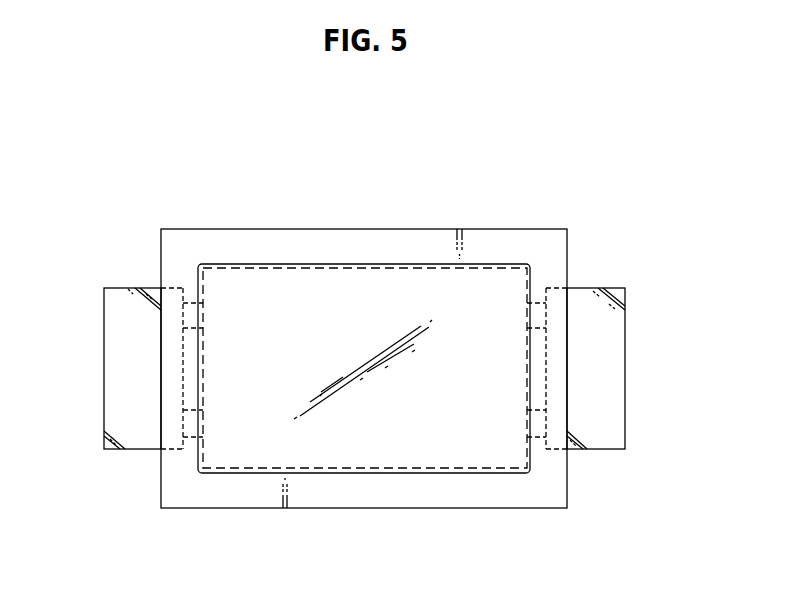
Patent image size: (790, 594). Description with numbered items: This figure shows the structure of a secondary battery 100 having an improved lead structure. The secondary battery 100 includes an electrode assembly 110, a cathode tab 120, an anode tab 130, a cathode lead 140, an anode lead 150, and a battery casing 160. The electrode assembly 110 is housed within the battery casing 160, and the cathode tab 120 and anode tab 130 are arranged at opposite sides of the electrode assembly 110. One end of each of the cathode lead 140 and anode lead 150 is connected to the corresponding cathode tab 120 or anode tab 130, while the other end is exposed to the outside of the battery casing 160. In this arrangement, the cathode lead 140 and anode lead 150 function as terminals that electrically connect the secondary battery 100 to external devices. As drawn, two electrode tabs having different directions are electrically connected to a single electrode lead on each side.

The secondary battery 100 is at (553, 140).
The electrode assembly 110 is at (376, 463).
The cathode tab 120 is at (537, 303).
The anode tab 130 is at (192, 303).
The cathode lead 140 is at (637, 315).
The anode lead 150 is at (92, 312).
The battery casing 160 is at (260, 510).